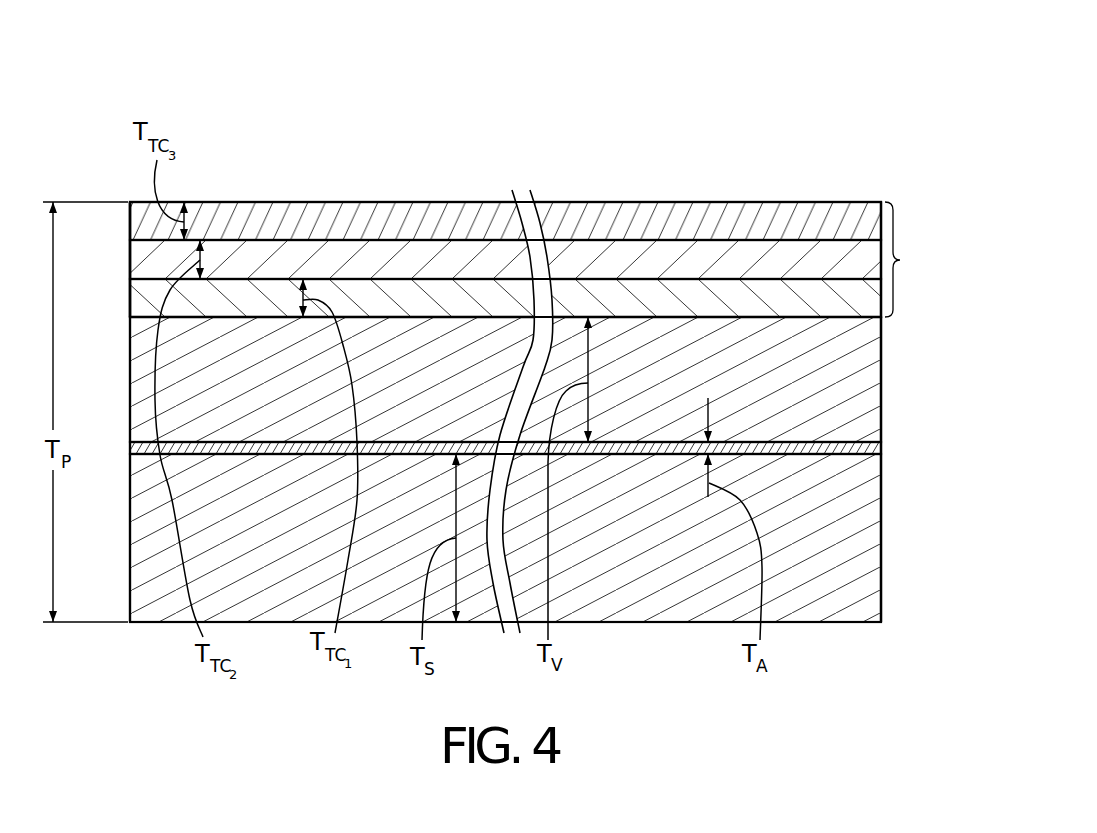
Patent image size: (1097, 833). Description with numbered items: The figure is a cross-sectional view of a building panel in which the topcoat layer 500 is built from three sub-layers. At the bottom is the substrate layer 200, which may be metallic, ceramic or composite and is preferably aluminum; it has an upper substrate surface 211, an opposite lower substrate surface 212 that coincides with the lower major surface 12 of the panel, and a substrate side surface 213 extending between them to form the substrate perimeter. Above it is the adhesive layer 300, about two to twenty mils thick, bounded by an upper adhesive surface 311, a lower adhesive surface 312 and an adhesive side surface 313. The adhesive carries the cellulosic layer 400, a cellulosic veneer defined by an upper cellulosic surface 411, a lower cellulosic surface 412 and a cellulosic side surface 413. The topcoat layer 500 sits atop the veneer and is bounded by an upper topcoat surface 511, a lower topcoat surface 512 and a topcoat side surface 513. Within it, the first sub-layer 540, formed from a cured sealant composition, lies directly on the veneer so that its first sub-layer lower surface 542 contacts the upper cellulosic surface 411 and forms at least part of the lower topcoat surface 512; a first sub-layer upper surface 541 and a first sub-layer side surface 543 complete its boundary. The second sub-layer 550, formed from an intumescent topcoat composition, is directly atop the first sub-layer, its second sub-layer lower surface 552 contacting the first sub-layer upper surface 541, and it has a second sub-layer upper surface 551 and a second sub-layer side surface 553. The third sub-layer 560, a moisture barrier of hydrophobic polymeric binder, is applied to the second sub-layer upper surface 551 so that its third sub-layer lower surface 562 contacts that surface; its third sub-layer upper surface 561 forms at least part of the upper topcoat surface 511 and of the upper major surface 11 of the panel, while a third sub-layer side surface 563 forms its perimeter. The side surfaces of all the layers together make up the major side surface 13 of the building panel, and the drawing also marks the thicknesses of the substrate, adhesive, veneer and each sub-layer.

The upper major surface 11 is at (505, 114).
The bottom surface of article 12 is at (483, 667).
The major side surface 13 is at (502, 343).
The substrate layer 200 is at (710, 607).
The upper substrate surface 211 is at (313, 455).
The lower substrate surface 212 is at (162, 625).
The substrate side surface 213 is at (867, 585).
The adhesive layer 300 is at (140, 448).
The upper adhesive surface 311 is at (417, 443).
The lower adhesive surface 312 is at (336, 455).
The adhesive side surface 313 is at (873, 448).
The cellulosic veneer layer 400 is at (682, 398).
The upper cellulosic surface 411 is at (713, 317).
The lower cellulosic surface 412 is at (632, 442).
The cellulosic side surface 413 is at (881, 380).
The topcoat layer 500 is at (536, 158).
The upper topcoat surface 511 is at (505, 114).
The lower topcoat surface 512 is at (505, 207).
The topcoat side surface 513 is at (93, 205).
The first sub-layer 540 is at (793, 302).
The first sub-layer upper surface 541 is at (590, 278).
The first sub-layer lower surface 542 is at (235, 318).
The first sub-layer side surface 543 is at (129, 300).
The second sub-layer 550 is at (720, 252).
The second sub-layer upper surface 551 is at (395, 240).
The second sub-layer lower surface 552 is at (422, 278).
The second sub-layer side surface 553 is at (129, 262).
The third sub-layer 560 is at (665, 215).
The third sub-layer upper surface 561 is at (224, 202).
The third sub-layer lower surface 562 is at (342, 240).
The third sub-layer side surface 563 is at (129, 220).